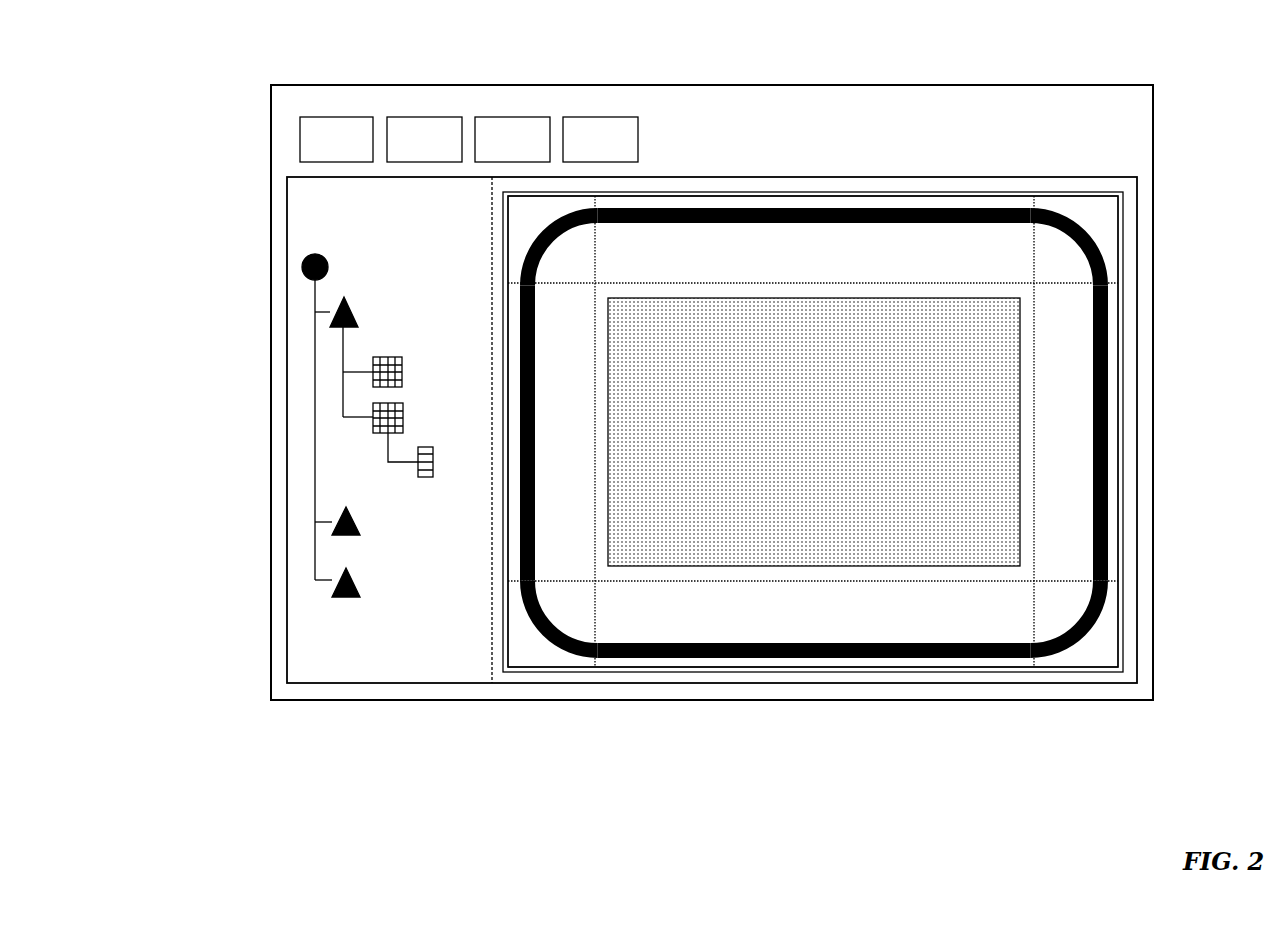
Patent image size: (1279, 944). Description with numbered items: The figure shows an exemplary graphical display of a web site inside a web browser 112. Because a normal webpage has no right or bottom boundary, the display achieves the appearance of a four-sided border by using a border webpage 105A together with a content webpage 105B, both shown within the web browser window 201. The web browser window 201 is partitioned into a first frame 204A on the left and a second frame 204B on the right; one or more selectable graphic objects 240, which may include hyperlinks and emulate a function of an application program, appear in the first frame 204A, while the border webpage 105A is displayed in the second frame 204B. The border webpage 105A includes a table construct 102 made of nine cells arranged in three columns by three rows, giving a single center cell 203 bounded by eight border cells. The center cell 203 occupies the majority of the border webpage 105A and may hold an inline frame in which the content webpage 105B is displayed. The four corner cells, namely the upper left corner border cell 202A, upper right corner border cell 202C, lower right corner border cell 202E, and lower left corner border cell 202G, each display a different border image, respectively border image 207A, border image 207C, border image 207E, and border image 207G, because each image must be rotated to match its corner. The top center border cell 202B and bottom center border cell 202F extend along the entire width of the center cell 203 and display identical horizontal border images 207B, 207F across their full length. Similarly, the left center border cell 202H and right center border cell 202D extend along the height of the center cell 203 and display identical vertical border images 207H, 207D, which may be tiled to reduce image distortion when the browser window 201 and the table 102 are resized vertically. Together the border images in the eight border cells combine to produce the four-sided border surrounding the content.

The web browser 112 is at (270, 117).
The web browser window 201 is at (285, 238).
The selectable graphic objects 240 is at (302, 595).
The first frame 204A is at (345, 670).
The second frame 204B is at (623, 680).
The border webpage 105A is at (725, 672).
The content webpage 105B is at (1020, 358).
The table construct 102 is at (1037, 565).
The center cell 203 is at (970, 573).
The upper left corner border cell 202A is at (518, 222).
The top center border cell 202B is at (798, 242).
The upper right corner border cell 202C is at (1093, 210).
The right center border cell 202D is at (1063, 388).
The lower right corner border cell 202E is at (1108, 642).
The bottom center border cell 202F is at (917, 625).
The lower left corner border cell 202G is at (520, 657).
The left center border cell 202H is at (550, 507).
The border image 207A is at (520, 277).
The horizontal border image 207B is at (870, 210).
The border image 207C is at (1067, 217).
The vertical border image 207D is at (1113, 425).
The border image 207E is at (1103, 627).
The horizontal border image 207F is at (843, 657).
The border image 207G is at (538, 627).
The vertical border image 207H is at (520, 298).